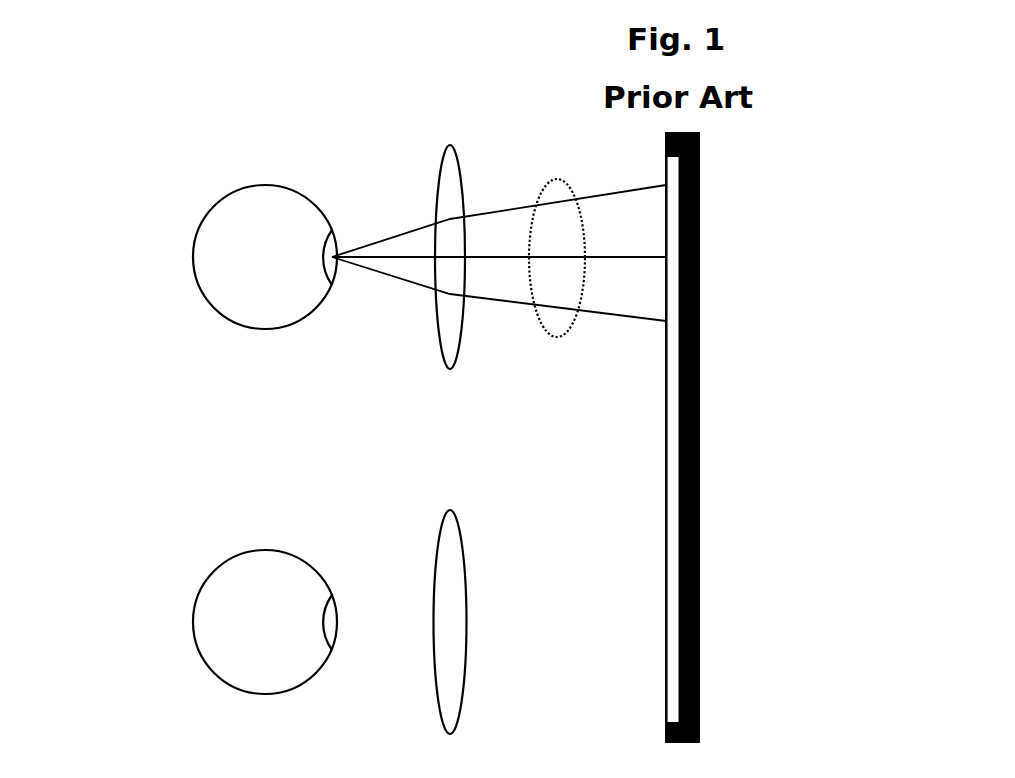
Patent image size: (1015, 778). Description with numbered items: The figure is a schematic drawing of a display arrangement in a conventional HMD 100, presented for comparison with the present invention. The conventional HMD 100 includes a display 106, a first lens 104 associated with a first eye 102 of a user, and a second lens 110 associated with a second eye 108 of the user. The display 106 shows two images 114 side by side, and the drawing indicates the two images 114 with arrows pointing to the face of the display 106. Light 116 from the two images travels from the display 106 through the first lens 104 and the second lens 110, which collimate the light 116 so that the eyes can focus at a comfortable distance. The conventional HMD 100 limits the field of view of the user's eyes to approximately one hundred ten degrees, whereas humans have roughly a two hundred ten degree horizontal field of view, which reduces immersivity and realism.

The conventional HMD 100 is at (930, 168).
The first eye 102 is at (215, 217).
The first lens 104 is at (448, 182).
The display 106 is at (700, 198).
The second eye 108 is at (205, 593).
The second lens 110 is at (447, 553).
The images 114 is at (658, 407).
The light 116 is at (538, 194).